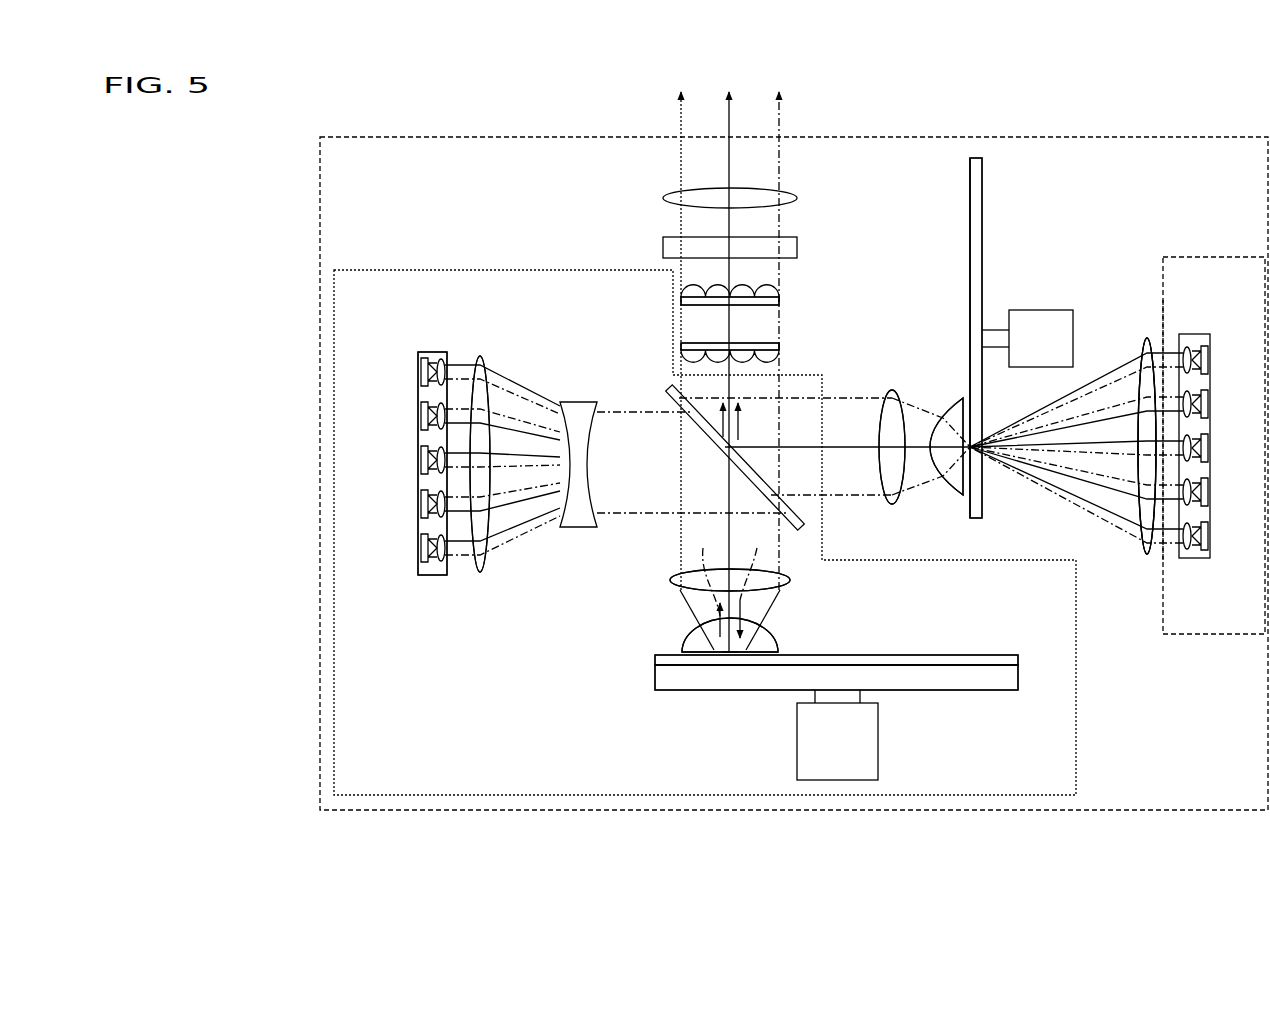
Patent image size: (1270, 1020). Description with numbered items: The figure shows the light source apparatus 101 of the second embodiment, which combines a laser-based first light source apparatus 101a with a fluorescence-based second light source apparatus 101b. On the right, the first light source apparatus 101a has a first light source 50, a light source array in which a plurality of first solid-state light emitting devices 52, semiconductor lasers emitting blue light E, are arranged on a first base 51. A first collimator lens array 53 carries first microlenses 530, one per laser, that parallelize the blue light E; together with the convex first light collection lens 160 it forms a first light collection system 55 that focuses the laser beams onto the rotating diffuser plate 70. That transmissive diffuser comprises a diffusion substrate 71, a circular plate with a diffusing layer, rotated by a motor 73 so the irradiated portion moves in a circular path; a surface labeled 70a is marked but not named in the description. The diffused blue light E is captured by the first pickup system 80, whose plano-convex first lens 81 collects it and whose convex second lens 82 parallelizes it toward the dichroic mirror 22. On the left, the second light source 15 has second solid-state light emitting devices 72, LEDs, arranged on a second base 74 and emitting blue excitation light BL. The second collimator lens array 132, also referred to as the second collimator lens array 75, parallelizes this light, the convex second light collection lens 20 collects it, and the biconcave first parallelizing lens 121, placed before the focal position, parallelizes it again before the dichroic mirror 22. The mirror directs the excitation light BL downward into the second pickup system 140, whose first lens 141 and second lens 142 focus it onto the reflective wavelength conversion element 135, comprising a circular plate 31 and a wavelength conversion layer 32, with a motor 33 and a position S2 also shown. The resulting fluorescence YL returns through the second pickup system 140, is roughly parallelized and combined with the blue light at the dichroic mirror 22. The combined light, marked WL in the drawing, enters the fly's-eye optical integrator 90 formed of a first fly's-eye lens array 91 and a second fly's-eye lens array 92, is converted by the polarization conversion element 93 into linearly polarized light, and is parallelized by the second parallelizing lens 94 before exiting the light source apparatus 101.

The light source apparatus 101 is at (1163, 124).
The first light source apparatus 101a is at (1183, 636).
The second light source apparatus 101b is at (455, 270).
The second light source 15 is at (410, 553).
The second solid-state light emitting devices 72 is at (420, 410).
The second collimator lens array 132 is at (447, 418).
The second base 74 is at (447, 582).
The second collimator lens array 75 is at (478, 341).
The second light collection lens 20 is at (485, 565).
The first parallelizing lens 121 is at (577, 400).
The dichroic mirror 22 is at (663, 400).
The excitation light BL is at (543, 528).
The fluorescence YL is at (723, 428).
The white light WL is at (850, 330).
The blue light E is at (738, 440).
The fly's-eye optical integrator 90 is at (625, 278).
The first fly's-eye lens array 91 is at (681, 348).
The second fly's-eye lens array 92 is at (681, 304).
The polarization conversion element 93 is at (663, 247).
The second parallelizing lens 94 is at (663, 198).
The first pickup system 80 is at (957, 350).
The first lens 81 is at (948, 405).
The second lens 82 is at (892, 390).
The rotating diffuser plate 70 is at (962, 278).
The phosphor layer 70a is at (968, 512).
The diffusion substrate 71 is at (978, 218).
The motor 73 is at (1037, 318).
The first light collection system 55 is at (1158, 263).
The first base 51 is at (1173, 556).
The first light collection lens 160 is at (1143, 328).
The first collimator lens array 53 is at (1163, 323).
The first light source 50 is at (1218, 541).
The first solid-state light emitting devices 52 is at (1212, 400).
The first microlenses 530 is at (1180, 400).
The second pickup system 140 is at (855, 570).
The first lens 141 is at (775, 640).
The second lens 142 is at (790, 582).
The detection position S2 is at (730, 657).
The wavelength conversion element 135 is at (1028, 682).
The circular plate 31 is at (945, 690).
The wavelength conversion layer 32 is at (940, 657).
The motor 33 is at (878, 745).